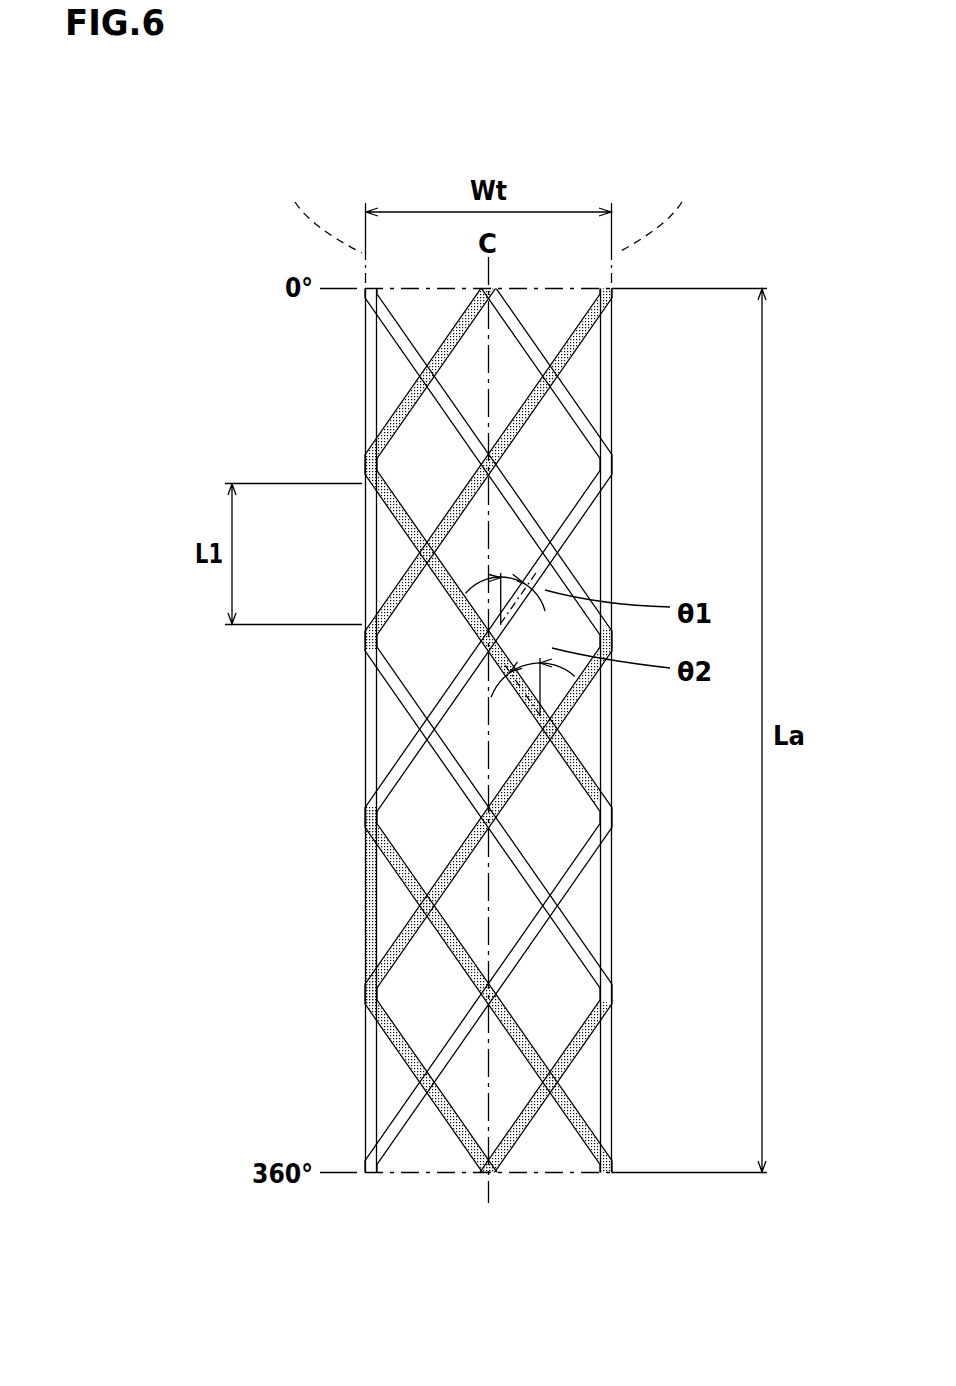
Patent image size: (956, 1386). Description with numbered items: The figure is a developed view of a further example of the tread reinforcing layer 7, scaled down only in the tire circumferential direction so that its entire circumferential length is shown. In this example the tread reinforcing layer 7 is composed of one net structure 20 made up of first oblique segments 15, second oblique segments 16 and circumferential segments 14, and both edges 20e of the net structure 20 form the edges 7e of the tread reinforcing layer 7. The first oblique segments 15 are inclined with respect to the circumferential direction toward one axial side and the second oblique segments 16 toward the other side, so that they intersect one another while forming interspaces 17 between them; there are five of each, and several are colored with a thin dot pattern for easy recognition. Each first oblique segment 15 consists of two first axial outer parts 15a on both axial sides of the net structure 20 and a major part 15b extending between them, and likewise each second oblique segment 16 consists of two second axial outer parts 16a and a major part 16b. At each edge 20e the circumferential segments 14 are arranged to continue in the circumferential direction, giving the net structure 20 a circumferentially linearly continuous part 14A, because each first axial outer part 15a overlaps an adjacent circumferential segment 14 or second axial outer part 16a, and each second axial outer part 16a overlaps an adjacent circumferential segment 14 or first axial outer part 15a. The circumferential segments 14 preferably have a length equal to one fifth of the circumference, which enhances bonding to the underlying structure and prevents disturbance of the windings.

The tread reinforcing layer 7 is at (668, 110).
The net structure 20 is at (710, 85).
The edge of the tread reinforcing layer 7e is at (496, 210).
The edge of the net structure 20e is at (496, 210).
The circumferential segment 14 is at (372, 537).
The circumferentially linearly continuous part 14A is at (378, 1196).
The first oblique segment 15 is at (457, 515).
The first axial outer part 15a is at (605, 301).
The major part of the first oblique segment 15b is at (570, 341).
The second oblique segment 16 is at (405, 870).
The second axial outer part 16a is at (372, 638).
The major part of the second oblique segment 16b is at (530, 1060).
The interspace 17 is at (548, 435).